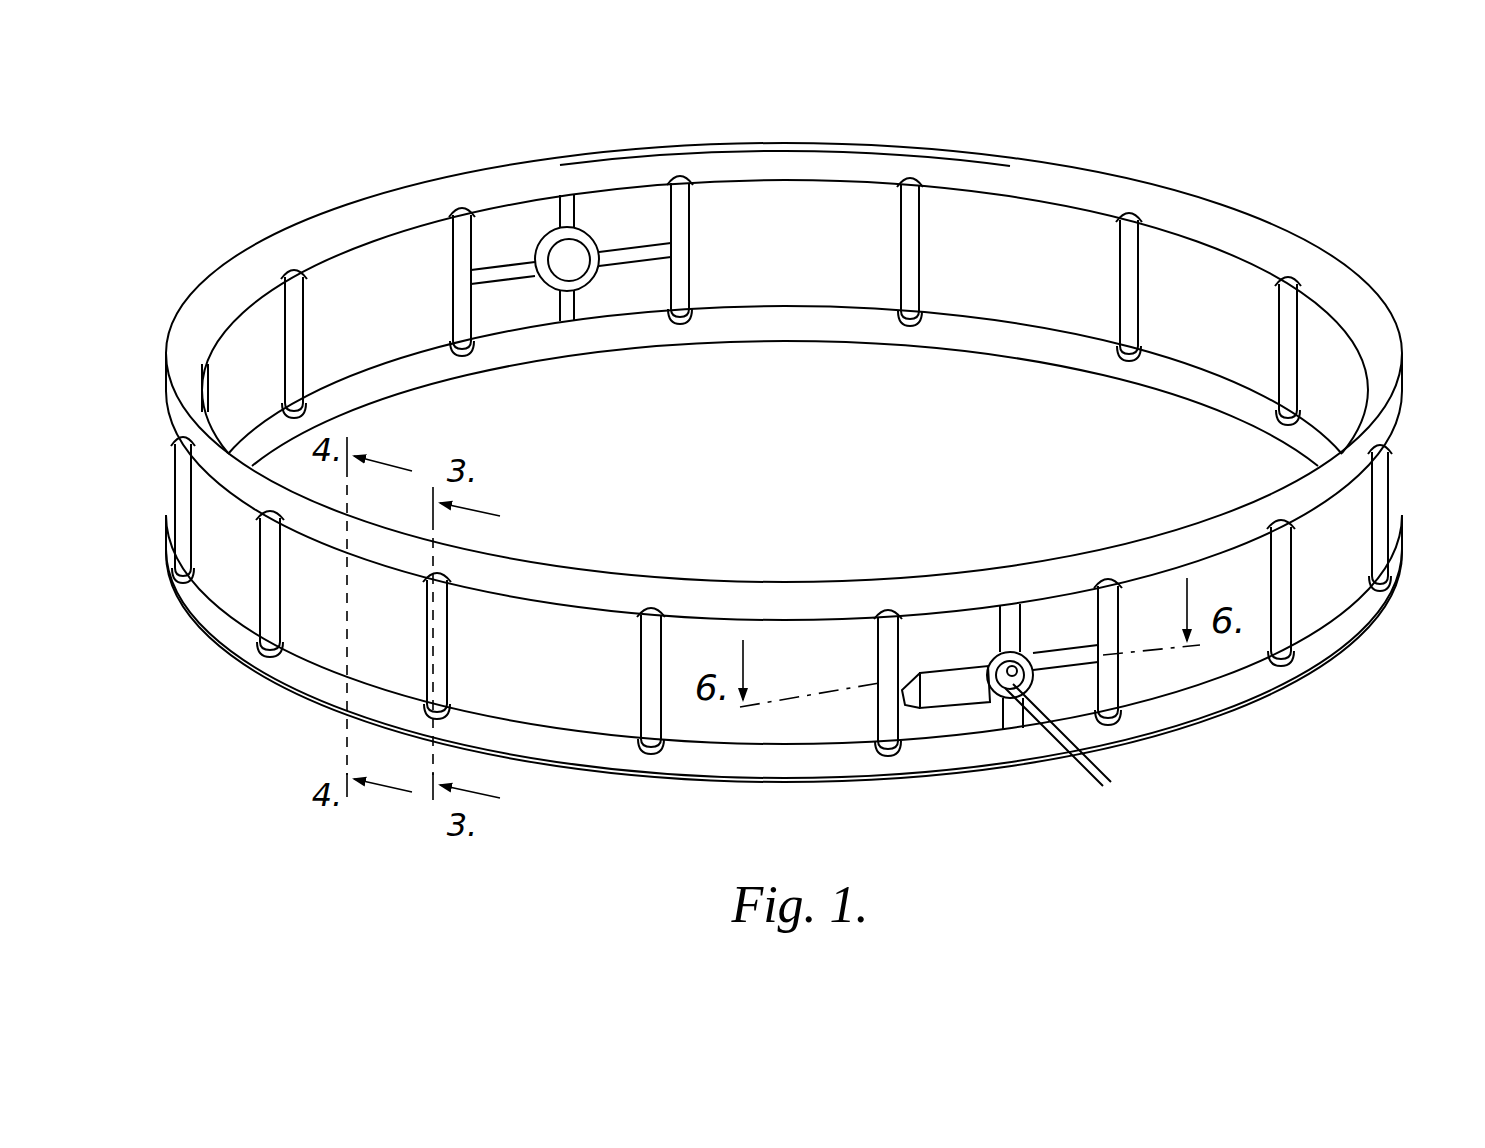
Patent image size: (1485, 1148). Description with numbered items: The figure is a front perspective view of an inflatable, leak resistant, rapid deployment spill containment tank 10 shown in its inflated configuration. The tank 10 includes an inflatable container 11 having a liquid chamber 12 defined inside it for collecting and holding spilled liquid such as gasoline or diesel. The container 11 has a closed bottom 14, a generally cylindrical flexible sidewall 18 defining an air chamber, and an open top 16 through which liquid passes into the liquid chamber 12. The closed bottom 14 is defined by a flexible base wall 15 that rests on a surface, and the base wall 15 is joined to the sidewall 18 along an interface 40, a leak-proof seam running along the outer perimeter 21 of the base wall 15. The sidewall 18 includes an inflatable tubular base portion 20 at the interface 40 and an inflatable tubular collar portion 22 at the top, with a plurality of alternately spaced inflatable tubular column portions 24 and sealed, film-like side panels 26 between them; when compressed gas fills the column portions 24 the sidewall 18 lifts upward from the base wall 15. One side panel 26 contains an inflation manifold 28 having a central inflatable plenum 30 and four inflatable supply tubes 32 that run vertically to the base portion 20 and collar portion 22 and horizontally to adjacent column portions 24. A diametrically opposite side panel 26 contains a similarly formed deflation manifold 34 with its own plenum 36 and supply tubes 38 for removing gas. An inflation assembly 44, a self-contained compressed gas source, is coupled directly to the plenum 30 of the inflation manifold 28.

The spill containment tank 10 is at (1120, 92).
The inflatable container 11 is at (846, 136).
The liquid chamber 12 is at (1180, 252).
The closed bottom 14 is at (315, 712).
The base wall 15 is at (796, 454).
The open top 16 is at (1108, 166).
The sidewall 18 is at (1402, 445).
The tubular base portion 20 is at (794, 778).
The outer perimeter 21 is at (784, 712).
The tubular collar portion 22 is at (404, 207).
The tubular column portions 24 is at (303, 328).
The side panels 26 is at (346, 259).
The inflation manifold 28 is at (1006, 656).
The plenum 30 is at (1013, 660).
The supply tubes 32 is at (1088, 655).
The deflation manifold 34 is at (608, 306).
The plenum 36 is at (586, 266).
The supply tubes 38 is at (567, 208).
The interface 40 is at (668, 783).
The inflation assembly 44 is at (1046, 703).